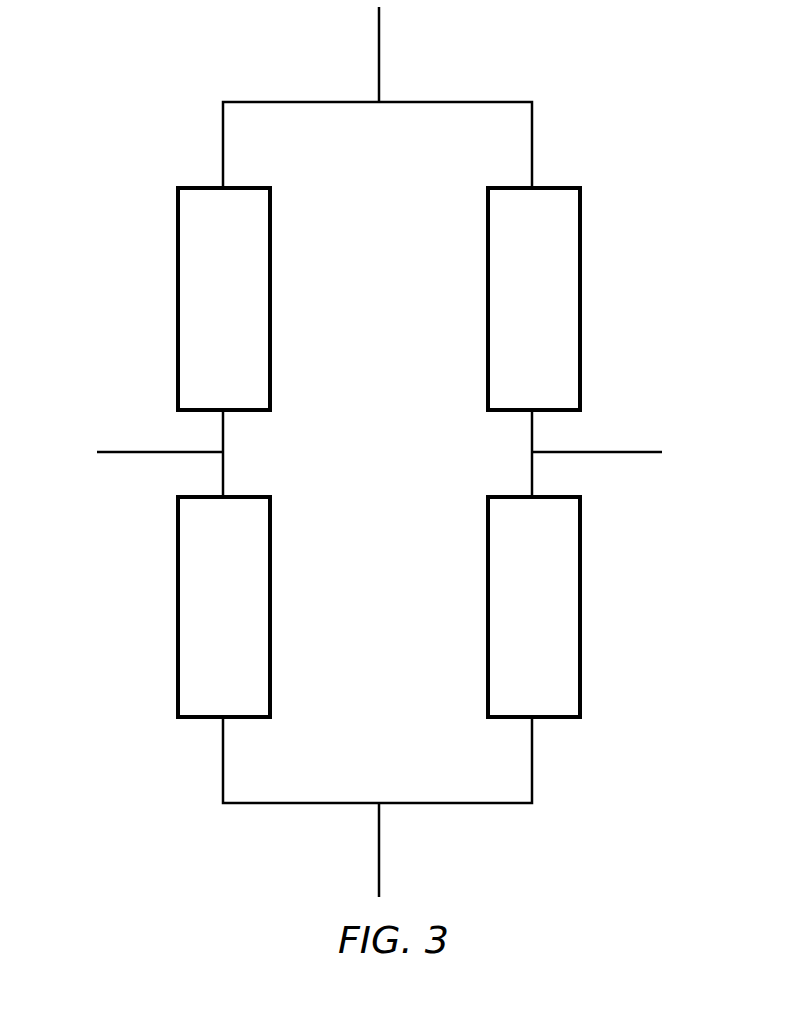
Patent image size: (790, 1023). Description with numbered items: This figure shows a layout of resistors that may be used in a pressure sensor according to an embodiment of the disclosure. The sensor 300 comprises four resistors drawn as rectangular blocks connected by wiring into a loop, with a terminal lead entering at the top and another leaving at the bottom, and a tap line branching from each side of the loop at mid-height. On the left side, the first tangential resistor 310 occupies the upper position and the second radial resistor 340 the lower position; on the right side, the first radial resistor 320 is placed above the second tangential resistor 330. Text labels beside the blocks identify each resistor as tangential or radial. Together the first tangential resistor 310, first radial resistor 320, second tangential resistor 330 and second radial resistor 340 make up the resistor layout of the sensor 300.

The sensor 300 is at (207, 44).
The first tangential resistor 310 is at (161, 299).
The first radial resistor 320 is at (603, 299).
The second tangential resistor 330 is at (601, 607).
The second radial resistor 340 is at (161, 607).